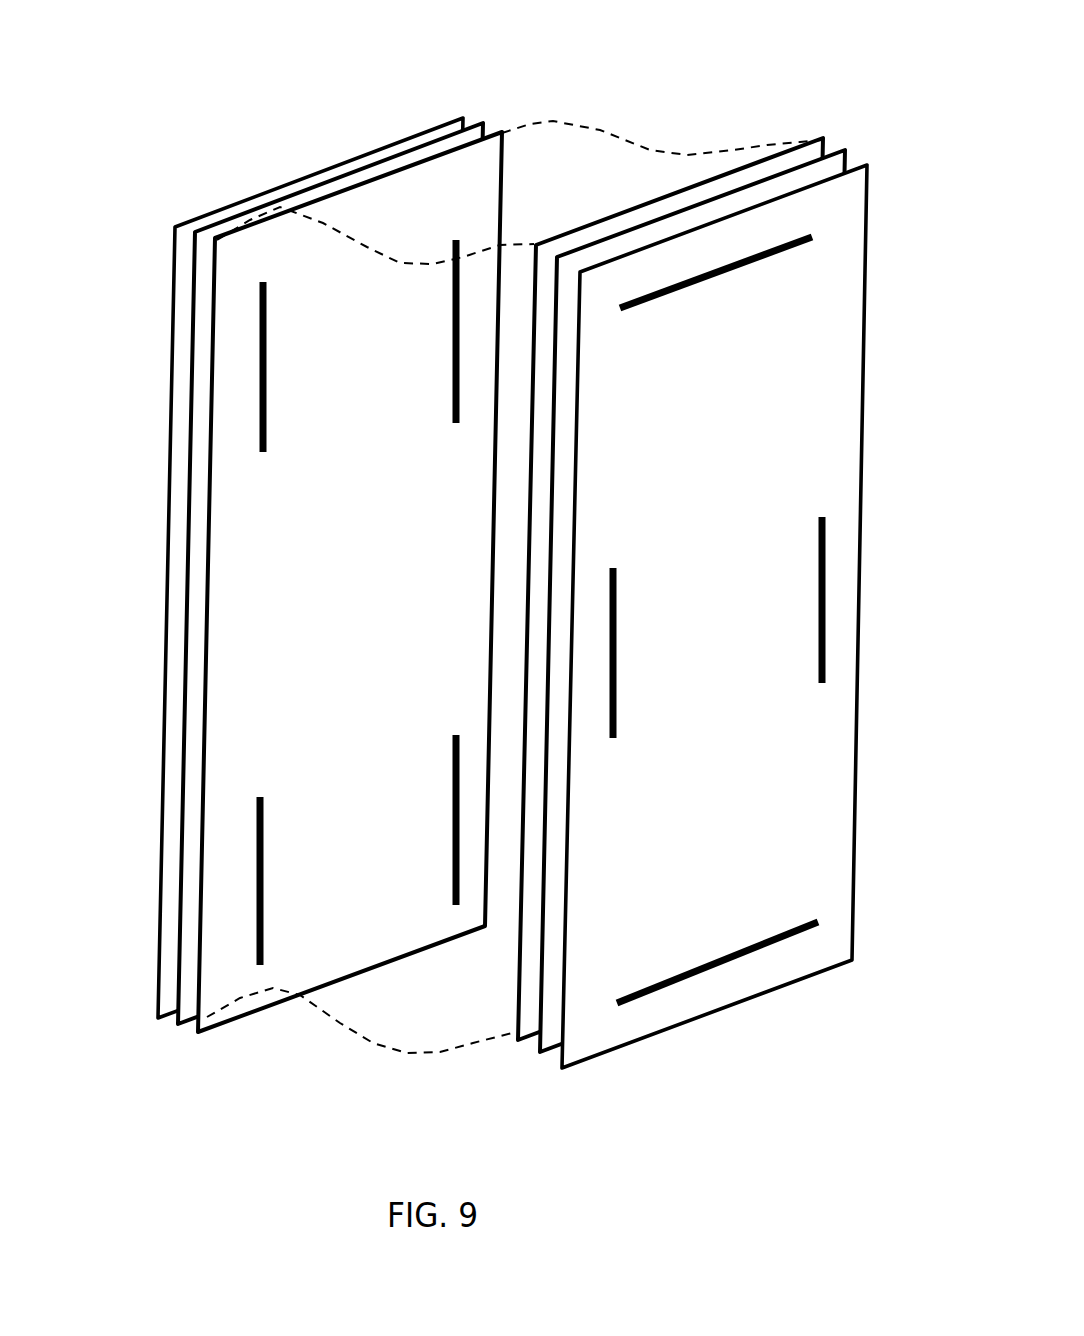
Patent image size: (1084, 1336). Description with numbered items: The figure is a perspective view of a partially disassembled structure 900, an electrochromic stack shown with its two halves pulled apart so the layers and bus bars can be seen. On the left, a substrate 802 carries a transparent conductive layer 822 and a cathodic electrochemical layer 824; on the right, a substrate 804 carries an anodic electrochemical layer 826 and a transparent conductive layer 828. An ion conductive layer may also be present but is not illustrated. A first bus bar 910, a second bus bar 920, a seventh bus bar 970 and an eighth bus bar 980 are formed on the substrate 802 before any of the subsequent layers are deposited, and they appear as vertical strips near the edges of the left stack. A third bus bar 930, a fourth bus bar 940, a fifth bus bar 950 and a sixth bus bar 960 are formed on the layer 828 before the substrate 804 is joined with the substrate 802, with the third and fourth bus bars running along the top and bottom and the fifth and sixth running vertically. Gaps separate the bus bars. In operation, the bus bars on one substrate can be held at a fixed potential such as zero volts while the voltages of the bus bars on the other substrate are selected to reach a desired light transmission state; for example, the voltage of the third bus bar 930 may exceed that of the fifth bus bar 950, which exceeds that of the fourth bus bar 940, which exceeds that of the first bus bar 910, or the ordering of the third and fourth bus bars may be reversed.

The partially disassembled structure 900 is at (191, 105).
The substrate 802 is at (273, 547).
The substrate 804 is at (739, 565).
The transparent conductive layer 822 is at (192, 307).
The cathodic electrochemical layer 824 is at (218, 845).
The anodic electrochemical layer 826 is at (676, 190).
The transparent conductive layer 828 is at (840, 151).
The first bus bar 910 is at (273, 336).
The second bus bar 920 is at (445, 302).
The third bus bar 930 is at (722, 273).
The fourth bus bar 940 is at (720, 958).
The fifth bus bar 950 is at (623, 645).
The sixth bus bar 960 is at (813, 605).
The seventh bus bar 970 is at (270, 842).
The eighth bus bar 980 is at (450, 773).